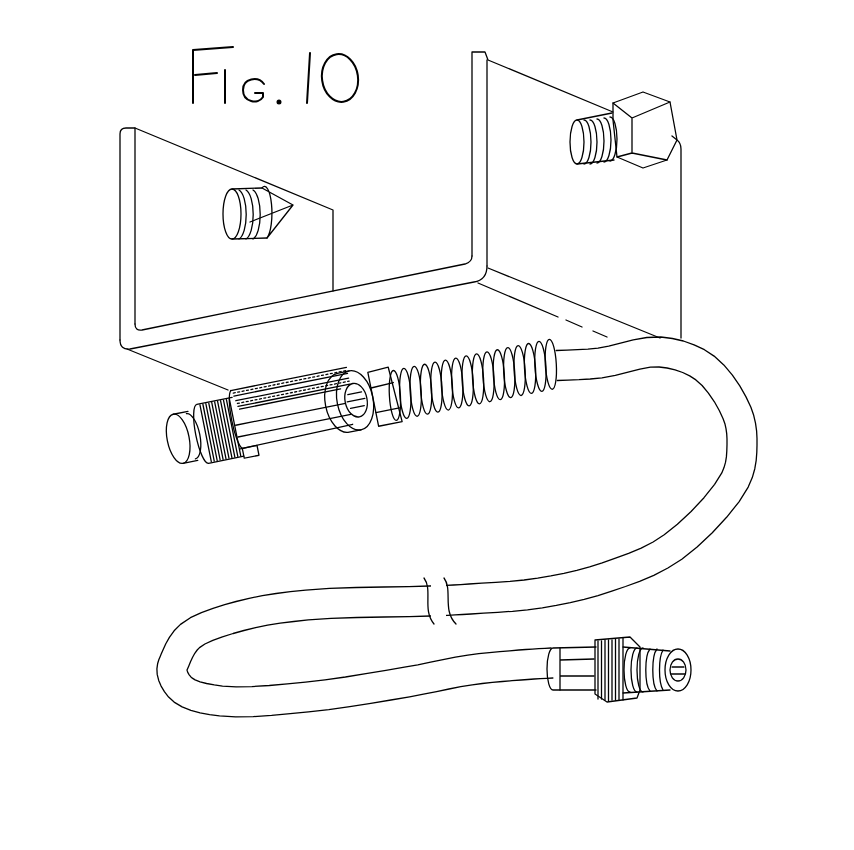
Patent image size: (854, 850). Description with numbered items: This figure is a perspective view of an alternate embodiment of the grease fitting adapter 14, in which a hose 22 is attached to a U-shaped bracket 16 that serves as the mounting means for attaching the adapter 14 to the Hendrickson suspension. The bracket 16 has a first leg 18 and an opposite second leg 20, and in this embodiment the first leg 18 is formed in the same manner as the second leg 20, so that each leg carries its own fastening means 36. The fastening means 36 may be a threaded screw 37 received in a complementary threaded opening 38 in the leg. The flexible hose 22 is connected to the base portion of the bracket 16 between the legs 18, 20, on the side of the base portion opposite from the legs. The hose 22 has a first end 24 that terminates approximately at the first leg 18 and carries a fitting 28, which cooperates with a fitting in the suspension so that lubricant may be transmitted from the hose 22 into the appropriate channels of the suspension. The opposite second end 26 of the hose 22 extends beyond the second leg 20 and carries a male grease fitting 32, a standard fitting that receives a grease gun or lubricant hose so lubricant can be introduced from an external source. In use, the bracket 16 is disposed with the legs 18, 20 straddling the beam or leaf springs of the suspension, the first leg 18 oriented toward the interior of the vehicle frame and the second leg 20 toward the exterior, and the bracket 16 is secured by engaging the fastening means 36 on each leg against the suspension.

The grease fitting adapter 14 is at (256, 491).
The U-shaped bracket 16 is at (394, 268).
The first leg 18 is at (120, 248).
The second leg 20 is at (632, 228).
The hose 22 is at (677, 530).
The first end 24 is at (533, 678).
The second end 26 is at (583, 367).
The fitting 28 is at (690, 663).
The male grease fitting 32 is at (168, 447).
The adjustable fastening means 36 is at (660, 108).
The threaded screw 37 is at (347, 133).
The threaded opening 38 is at (237, 237).